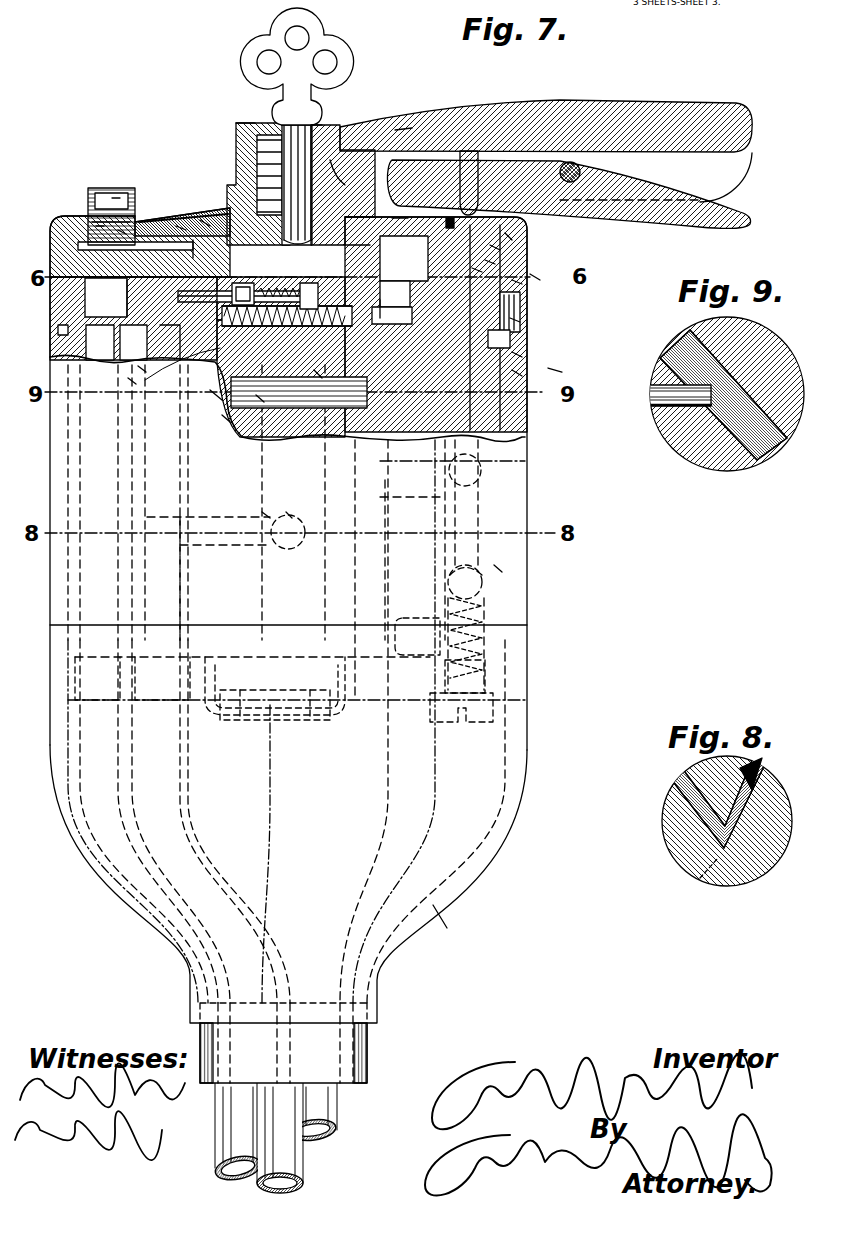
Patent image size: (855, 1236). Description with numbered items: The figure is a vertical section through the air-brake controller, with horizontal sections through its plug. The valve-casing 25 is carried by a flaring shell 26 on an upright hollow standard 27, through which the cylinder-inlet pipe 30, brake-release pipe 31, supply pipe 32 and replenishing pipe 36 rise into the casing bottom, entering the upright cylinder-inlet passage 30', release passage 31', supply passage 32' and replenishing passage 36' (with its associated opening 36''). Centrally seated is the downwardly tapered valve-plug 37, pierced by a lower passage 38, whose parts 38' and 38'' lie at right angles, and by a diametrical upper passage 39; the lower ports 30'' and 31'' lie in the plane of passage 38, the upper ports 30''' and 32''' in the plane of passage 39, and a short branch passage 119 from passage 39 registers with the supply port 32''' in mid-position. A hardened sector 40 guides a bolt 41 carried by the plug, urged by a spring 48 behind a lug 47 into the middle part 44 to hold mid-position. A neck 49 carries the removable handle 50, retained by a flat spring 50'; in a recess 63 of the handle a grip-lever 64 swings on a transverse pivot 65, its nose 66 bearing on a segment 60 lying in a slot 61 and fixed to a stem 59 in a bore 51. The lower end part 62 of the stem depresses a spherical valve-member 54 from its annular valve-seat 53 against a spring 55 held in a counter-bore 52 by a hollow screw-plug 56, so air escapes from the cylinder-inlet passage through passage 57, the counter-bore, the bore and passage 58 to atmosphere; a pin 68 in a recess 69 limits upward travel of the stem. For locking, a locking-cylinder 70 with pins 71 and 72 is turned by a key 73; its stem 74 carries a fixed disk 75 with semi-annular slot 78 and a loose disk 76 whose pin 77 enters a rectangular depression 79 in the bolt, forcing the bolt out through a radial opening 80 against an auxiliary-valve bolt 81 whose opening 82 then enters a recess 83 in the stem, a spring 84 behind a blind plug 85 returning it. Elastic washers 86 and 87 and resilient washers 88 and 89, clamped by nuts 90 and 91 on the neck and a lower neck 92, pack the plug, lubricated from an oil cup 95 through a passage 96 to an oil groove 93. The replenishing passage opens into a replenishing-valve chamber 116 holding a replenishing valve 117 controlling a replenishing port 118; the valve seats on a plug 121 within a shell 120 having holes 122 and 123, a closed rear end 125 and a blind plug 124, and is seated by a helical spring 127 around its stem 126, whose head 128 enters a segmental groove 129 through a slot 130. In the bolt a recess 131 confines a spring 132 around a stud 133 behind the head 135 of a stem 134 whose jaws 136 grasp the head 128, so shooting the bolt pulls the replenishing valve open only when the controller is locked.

In FIG. 7, the valve-casing 25 is at (515, 515).
In FIG. 7, the flaring shell 26 is at (440, 915).
In FIG. 7, the upright hollow standard 27 is at (368, 1052).
In FIG. 7, the cylinder-inlet pipe 30 is at (395, 956).
In FIG. 7, the brake-release pipe 31 is at (282, 903).
In FIG. 7, the supply pipe 32 is at (278, 949).
In FIG. 7, the replenishing pipe 36 is at (176, 895).
In FIG. 7, the valve-plug 37 is at (360, 236).
In FIG. 9, the valve-plug 37 is at (703, 455).
In FIG. 8, the valve-plug 37 is at (680, 852).
In FIG. 7, the lower passage 38 is at (268, 549).
In FIG. 8, the lower passage 38 is at (696, 882).
In FIG. 7, the upper passage 39 is at (292, 380).
In FIG. 9, the upper passage 39 is at (762, 455).
In FIG. 7, the sector 40 is at (425, 280).
In FIG. 7, the bolt 41 is at (512, 395).
In FIG. 7, the middle part 44 is at (498, 248).
In FIG. 7, the lug 47 is at (318, 375).
In FIG. 7, the spring 48 is at (260, 400).
In FIG. 7, the neck 49 is at (318, 128).
In FIG. 7, the handle 50 is at (546, 111).
In FIG. 7, the bore 51 is at (520, 373).
In FIG. 7, the counter-bore 52 is at (488, 610).
In FIG. 7, the annular valve-seat 53 is at (492, 575).
In FIG. 7, the valve-member 54 is at (480, 588).
In FIG. 7, the spring 55 is at (485, 650).
In FIG. 7, the hollow screw-plug 56 is at (492, 680).
In FIG. 7, the passage 57 is at (410, 620).
In FIG. 7, the passage 58 is at (483, 475).
In FIG. 7, the stem 59 is at (518, 332).
In FIG. 7, the segment 60 is at (510, 236).
In FIG. 7, the slot 61 is at (492, 262).
In FIG. 7, the lower end part 62 is at (500, 568).
In FIG. 7, the grip-lever recess 63 is at (738, 190).
In FIG. 7, the grip-lever 64 is at (640, 186).
In FIG. 7, the transverse pivot 65 is at (582, 172).
In FIG. 7, the nose 66 is at (476, 198).
In FIG. 7, the pin 68 is at (560, 370).
In FIG. 7, the recess 69 is at (520, 355).
In FIG. 7, the locking-cylinder 70 is at (281, 126).
In FIG. 7, the pins 71 is at (256, 148).
In FIG. 7, the pins 72 is at (236, 128).
In FIG. 7, the key 73 is at (240, 60).
In FIG. 7, the stem 74 is at (230, 202).
In FIG. 7, the disk 75 is at (222, 214).
In FIG. 7, the disk 76 is at (190, 222).
In FIG. 7, the pin 77 is at (400, 220).
In FIG. 7, the semi-annular slot 78 is at (205, 222).
In FIG. 7, the rectangular depression 79 is at (345, 170).
In FIG. 7, the radial opening 80 is at (512, 338).
In FIG. 7, the auxiliary-valve bolt 81 is at (518, 320).
In FIG. 7, the opening 82 is at (480, 270).
In FIG. 7, the recess 83 is at (538, 277).
In FIG. 7, the spring 84 is at (520, 282).
In FIG. 7, the blind plug 85 is at (522, 310).
In FIG. 7, the elastic washer 86 is at (450, 220).
In FIG. 7, the elastic washer 87 is at (205, 690).
In FIG. 7, the resilient washer 88 is at (180, 228).
In FIG. 7, the resilient washer 89 is at (212, 700).
In FIG. 7, the nut 90 is at (405, 135).
In FIG. 7, the nut 91 is at (335, 720).
In FIG. 7, the lower neck 92 is at (290, 720).
In FIG. 7, the oil groove 93 is at (108, 190).
In FIG. 7, the oil cup 95 is at (100, 226).
In FIG. 7, the passage 96 is at (120, 232).
In FIG. 7, the replenishing-valve chamber 116 is at (62, 232).
In FIG. 7, the replenishing valve 117 is at (80, 248).
In FIG. 7, the replenishing port 118 is at (150, 372).
In FIG. 7, the branch passage 119 is at (185, 395).
In FIG. 9, the branch passage 119 is at (675, 405).
In FIG. 7, the shell 120 is at (70, 345).
In FIG. 7, the plug 121 is at (66, 333).
In FIG. 7, the hole 122 is at (118, 362).
In FIG. 7, the hole 123 is at (130, 368).
In FIG. 7, the blind plug 124 is at (62, 305).
In FIG. 7, the closed rear end 125 is at (96, 222).
In FIG. 7, the stem 126 is at (127, 296).
In FIG. 7, the helical spring 127 is at (127, 312).
In FIG. 7, the head 128 is at (132, 380).
In FIG. 7, the segmental groove 129 is at (115, 200).
In FIG. 7, the slot 130 is at (140, 370).
In FIG. 7, the recess 131 is at (268, 515).
In FIG. 7, the spring 132 is at (225, 420).
In FIG. 7, the stud 133 is at (406, 330).
In FIG. 7, the stem 134 is at (230, 290).
In FIG. 7, the head 135 is at (284, 357).
In FIG. 7, the jaws 136 is at (188, 342).
In FIG. 7, the cylinder-inlet passage 30' is at (479, 540).
In FIG. 7, the lower cylinder-inlet port 30'' is at (387, 721).
In FIG. 7, the upper cylinder-inlet port 30''' is at (347, 570).
In FIG. 7, the release passage 31' is at (296, 651).
In FIG. 7, the release port 31'' is at (218, 563).
In FIG. 7, the supply passage 32' is at (208, 512).
In FIG. 7, the supply port 32''' is at (202, 417).
In FIG. 7, the replenishing passage 36' is at (79, 502).
In FIG. 7, the tube branch 36'' is at (65, 502).
In FIG. 7, the lower passage part 38' is at (306, 496).
In FIG. 8, the lower passage part 38' is at (698, 800).
In FIG. 8, the lower passage part 38'' is at (773, 768).
In FIG. 7, the flat spring 50' is at (353, 143).